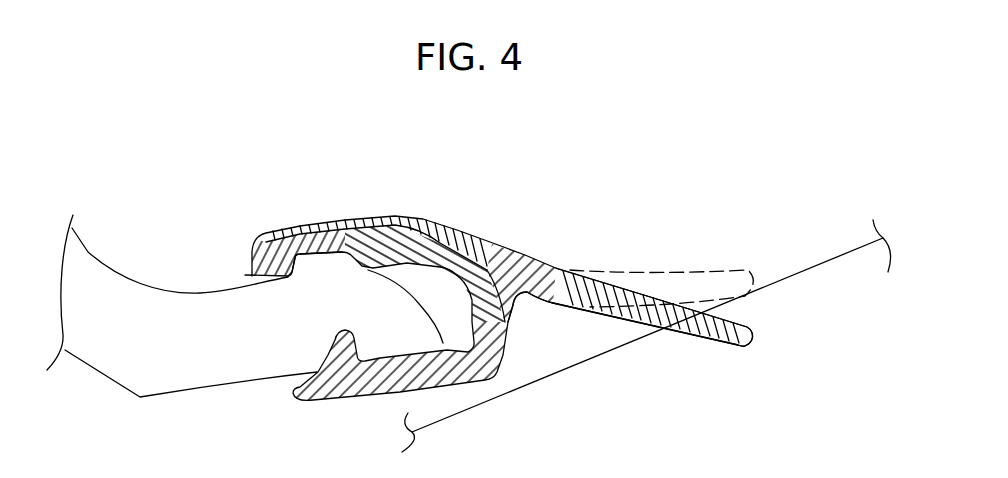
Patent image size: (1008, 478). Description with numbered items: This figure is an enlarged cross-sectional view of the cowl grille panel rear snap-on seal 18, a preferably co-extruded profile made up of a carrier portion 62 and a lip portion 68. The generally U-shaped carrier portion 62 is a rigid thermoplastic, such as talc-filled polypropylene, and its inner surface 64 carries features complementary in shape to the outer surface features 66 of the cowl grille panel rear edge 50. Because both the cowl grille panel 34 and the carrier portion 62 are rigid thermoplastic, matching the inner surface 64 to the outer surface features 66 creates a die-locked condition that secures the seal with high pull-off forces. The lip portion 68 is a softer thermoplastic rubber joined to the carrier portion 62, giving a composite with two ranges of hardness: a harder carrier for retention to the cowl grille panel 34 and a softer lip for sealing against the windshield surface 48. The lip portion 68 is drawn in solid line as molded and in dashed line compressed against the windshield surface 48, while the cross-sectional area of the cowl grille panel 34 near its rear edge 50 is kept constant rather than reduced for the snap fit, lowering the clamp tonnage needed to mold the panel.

The cowl grille panel rear snap-on seal 18 is at (558, 268).
The cowl grille panel 34 is at (86, 268).
The windshield surface 48 is at (828, 262).
The cowl grille panel rear edge 50 is at (372, 300).
The carrier portion 62 is at (256, 277).
The inner surface 64 is at (357, 262).
The outer surface features 66 is at (316, 260).
The lip portion 68 is at (553, 287).